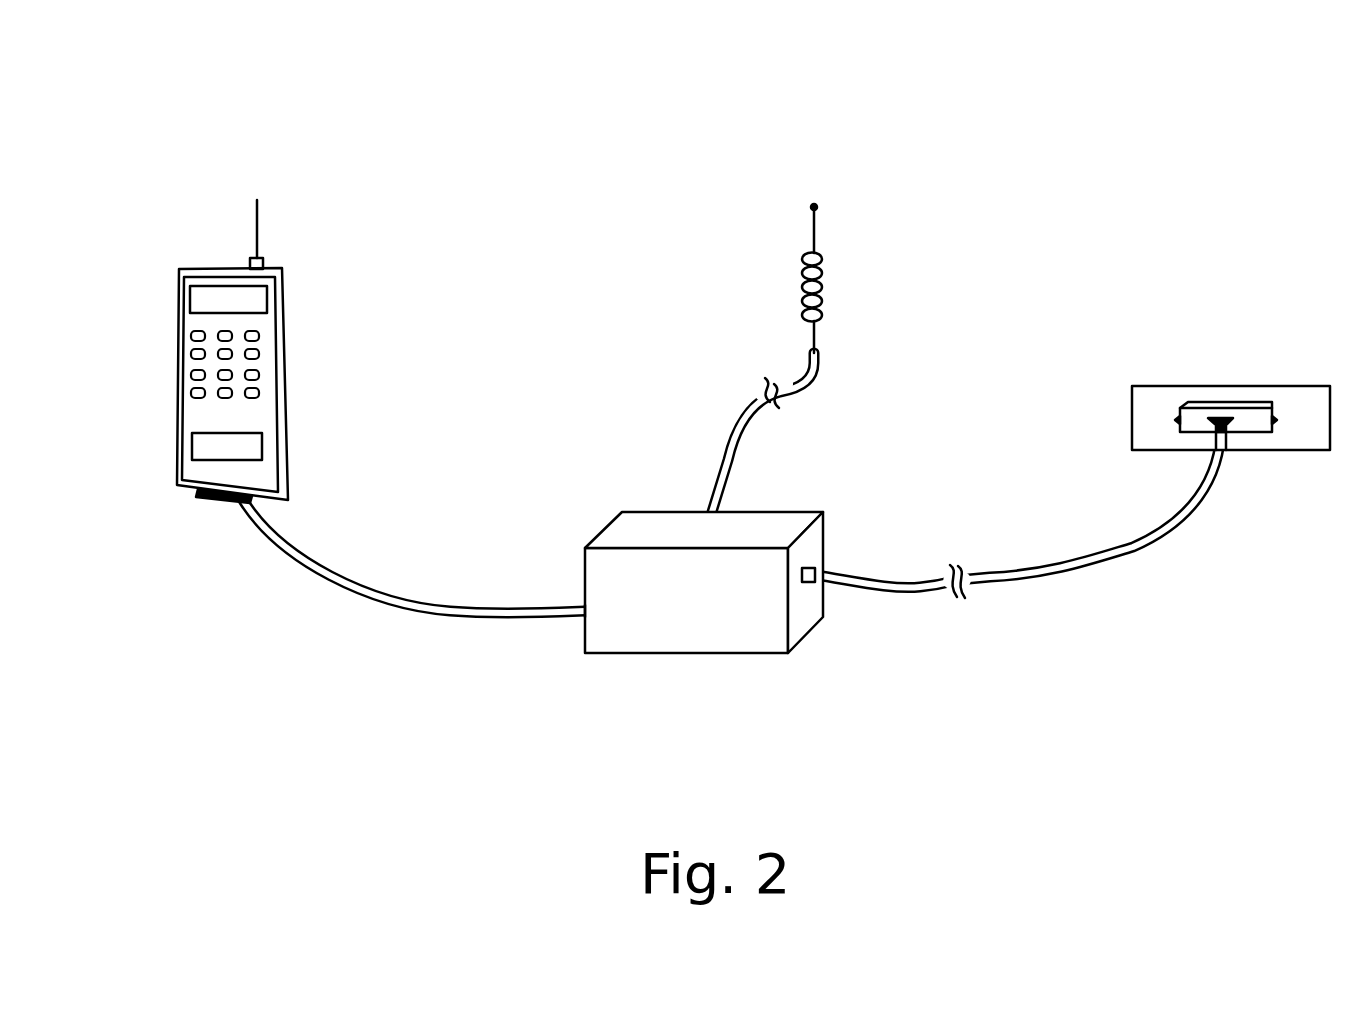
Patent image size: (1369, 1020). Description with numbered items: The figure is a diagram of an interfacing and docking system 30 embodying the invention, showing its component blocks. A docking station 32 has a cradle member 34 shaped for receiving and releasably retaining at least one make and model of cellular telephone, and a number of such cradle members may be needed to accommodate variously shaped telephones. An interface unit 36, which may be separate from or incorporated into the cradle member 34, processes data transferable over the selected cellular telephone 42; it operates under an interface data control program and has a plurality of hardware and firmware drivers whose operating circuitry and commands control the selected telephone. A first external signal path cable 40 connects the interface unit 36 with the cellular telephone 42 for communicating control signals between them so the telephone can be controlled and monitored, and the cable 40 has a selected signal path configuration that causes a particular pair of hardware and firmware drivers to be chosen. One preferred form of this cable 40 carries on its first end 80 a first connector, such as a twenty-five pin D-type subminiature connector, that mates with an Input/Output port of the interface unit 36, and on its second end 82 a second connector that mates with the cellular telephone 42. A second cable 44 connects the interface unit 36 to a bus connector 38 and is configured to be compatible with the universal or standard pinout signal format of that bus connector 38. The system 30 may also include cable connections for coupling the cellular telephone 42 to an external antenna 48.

The interfacing and docking system 30 is at (932, 148).
The docking station 32 is at (461, 477).
The cradle member 34 is at (292, 323).
The interface unit 36 is at (678, 657).
The bus connector 38 is at (1233, 397).
The first external signal path cable 40 is at (338, 583).
The cellular telephone 42 is at (192, 323).
The second cable 44 is at (1095, 567).
The external antenna 48 is at (832, 287).
The first end 80 is at (585, 617).
The second end 82 is at (232, 502).